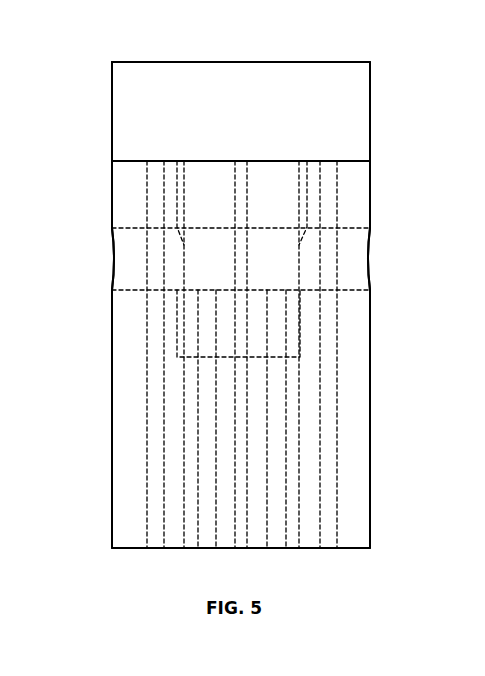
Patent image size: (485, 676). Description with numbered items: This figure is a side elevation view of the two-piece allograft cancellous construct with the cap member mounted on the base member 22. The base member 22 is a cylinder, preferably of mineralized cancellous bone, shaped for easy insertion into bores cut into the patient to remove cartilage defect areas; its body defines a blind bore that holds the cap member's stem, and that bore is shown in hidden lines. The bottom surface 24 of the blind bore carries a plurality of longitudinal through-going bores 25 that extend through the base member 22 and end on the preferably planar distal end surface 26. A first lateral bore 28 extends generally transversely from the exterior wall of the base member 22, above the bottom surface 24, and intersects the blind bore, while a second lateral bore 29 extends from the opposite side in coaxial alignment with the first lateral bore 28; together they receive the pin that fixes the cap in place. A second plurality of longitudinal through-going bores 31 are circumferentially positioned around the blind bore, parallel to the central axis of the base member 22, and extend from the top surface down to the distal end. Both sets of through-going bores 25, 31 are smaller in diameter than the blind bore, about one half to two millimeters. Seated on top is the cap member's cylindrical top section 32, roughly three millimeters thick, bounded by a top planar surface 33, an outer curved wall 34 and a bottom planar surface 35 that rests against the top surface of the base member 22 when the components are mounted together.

The base member 22 is at (371, 425).
The bottom surface of the blind bore 24 is at (200, 358).
The longitudinal through-going bores 25 is at (185, 518).
The distal end surface 26 is at (137, 548).
The first lateral bore 28 is at (370, 262).
The second lateral bore 29 is at (113, 258).
The second plurality of longitudinal through-going bores 31 is at (145, 442).
The cylindrical top section 32 is at (372, 110).
The top planar surface 33 is at (312, 62).
The outer curved wall 34 is at (123, 118).
The bottom planar surface 35 is at (348, 162).